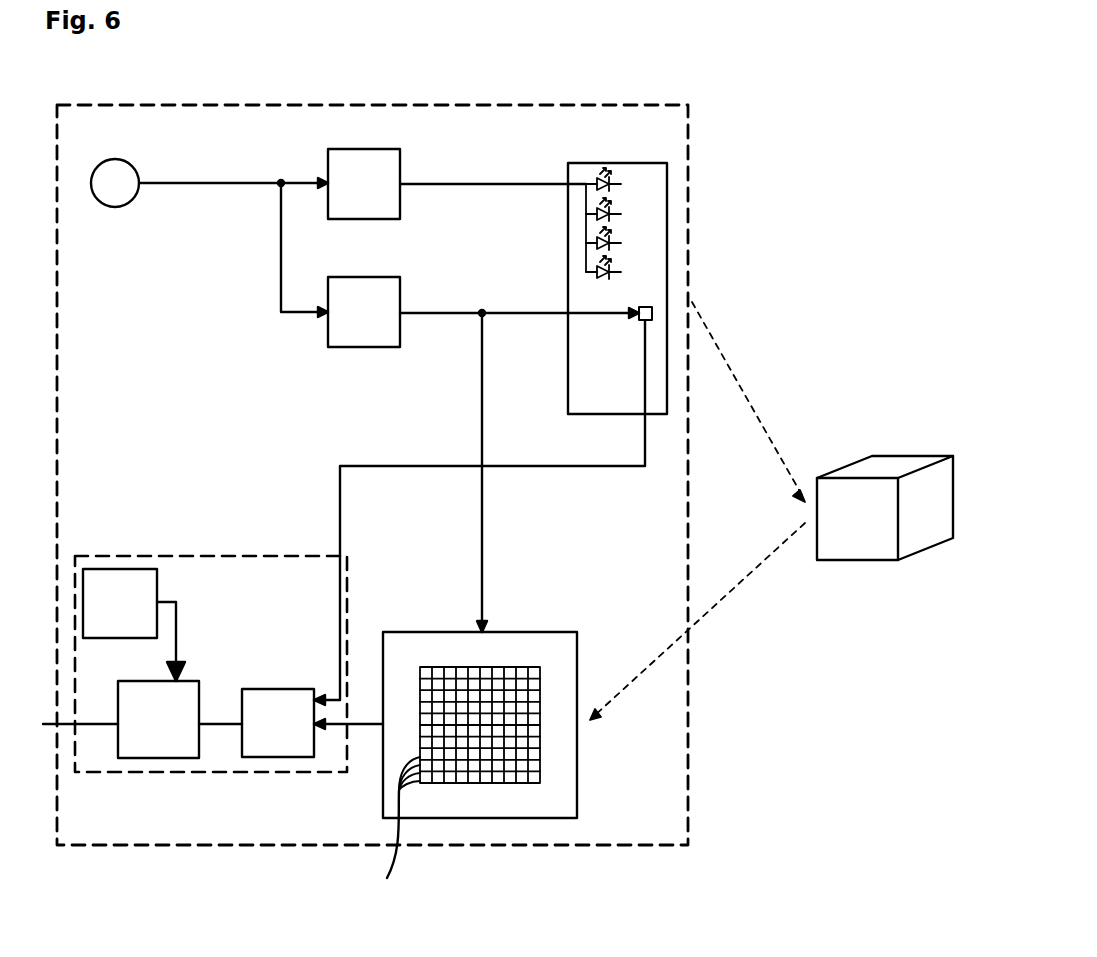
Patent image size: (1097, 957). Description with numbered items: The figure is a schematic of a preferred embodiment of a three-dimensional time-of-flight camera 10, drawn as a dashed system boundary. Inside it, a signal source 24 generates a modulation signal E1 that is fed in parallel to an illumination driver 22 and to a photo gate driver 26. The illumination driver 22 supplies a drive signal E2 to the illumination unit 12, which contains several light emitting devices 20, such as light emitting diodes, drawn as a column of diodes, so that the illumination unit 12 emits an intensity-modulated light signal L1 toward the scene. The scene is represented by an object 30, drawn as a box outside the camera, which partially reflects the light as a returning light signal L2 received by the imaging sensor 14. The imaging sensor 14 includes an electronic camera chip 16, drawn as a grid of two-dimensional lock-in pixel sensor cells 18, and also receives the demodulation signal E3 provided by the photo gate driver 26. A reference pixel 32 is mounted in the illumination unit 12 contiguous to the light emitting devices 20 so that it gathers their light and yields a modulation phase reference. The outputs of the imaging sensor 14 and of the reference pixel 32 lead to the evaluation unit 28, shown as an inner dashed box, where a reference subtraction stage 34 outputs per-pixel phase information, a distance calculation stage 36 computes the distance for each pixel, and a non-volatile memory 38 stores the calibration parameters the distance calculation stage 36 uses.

The 3D TOF camera 10 is at (690, 790).
The illumination unit 12 is at (652, 163).
The imaging sensor 14 is at (497, 820).
The electronic camera chip 16 is at (508, 665).
The lock-in pixel sensor cells 18 is at (384, 840).
The light emitting devices 20 is at (622, 215).
The illumination driver 22 is at (404, 160).
The signal source 24 is at (136, 167).
The photo gate driver 26 is at (404, 292).
The evaluation unit 28 is at (233, 556).
The object 30 is at (892, 456).
The reference pixel 32 is at (652, 308).
The reference subtraction stage 34 is at (258, 689).
The distance calculation stage 36 is at (157, 760).
The non-volatile memory 38 is at (158, 585).
The modulation signal E1 is at (241, 186).
The drive signal E2 is at (516, 187).
The demodulation signal E3 is at (438, 318).
The modulated light signal L1 is at (735, 378).
The returning light signal L2 is at (745, 595).